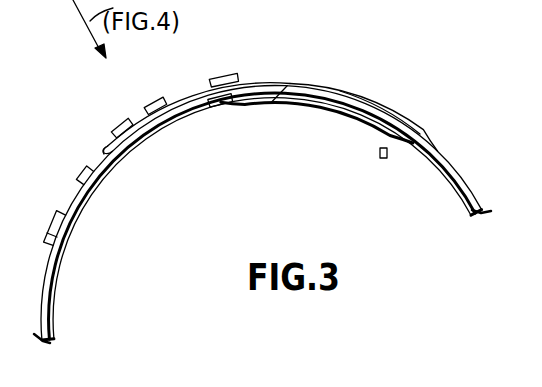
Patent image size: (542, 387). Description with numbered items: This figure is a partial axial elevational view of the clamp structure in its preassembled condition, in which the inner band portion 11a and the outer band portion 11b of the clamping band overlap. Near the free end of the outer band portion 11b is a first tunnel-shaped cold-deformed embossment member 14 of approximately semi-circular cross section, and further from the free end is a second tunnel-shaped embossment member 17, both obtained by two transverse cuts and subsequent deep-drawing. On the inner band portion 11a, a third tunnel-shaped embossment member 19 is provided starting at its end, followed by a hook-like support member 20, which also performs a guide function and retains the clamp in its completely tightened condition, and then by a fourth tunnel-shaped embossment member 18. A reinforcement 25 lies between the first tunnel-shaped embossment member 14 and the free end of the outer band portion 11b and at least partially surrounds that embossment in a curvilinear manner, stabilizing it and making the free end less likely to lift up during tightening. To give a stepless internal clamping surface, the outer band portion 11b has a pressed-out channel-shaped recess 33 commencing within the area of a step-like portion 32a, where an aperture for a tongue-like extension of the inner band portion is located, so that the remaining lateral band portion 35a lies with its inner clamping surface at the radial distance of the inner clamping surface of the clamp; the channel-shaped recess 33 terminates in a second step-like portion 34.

The inner band portion 11a is at (158, 130).
The outer band portion 11b is at (181, 106).
The first tunnel-shaped embossment member 14 is at (120, 128).
The second tunnel-shaped embossment member 17 is at (230, 78).
The fourth tunnel-shaped embossment member 18 is at (50, 226).
The third tunnel-shaped embossment member 19 is at (150, 108).
The hook-like support member 20 is at (78, 173).
The reinforcement 25 is at (100, 145).
The step-like portion 32a is at (272, 96).
The pressed-out channel-shaped recess 33 is at (318, 79).
The second step-like portion 34 is at (367, 107).
The lateral band portion 35a is at (325, 106).